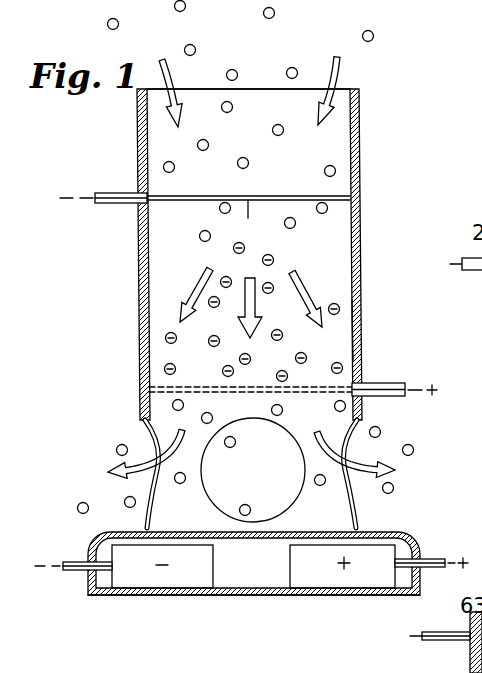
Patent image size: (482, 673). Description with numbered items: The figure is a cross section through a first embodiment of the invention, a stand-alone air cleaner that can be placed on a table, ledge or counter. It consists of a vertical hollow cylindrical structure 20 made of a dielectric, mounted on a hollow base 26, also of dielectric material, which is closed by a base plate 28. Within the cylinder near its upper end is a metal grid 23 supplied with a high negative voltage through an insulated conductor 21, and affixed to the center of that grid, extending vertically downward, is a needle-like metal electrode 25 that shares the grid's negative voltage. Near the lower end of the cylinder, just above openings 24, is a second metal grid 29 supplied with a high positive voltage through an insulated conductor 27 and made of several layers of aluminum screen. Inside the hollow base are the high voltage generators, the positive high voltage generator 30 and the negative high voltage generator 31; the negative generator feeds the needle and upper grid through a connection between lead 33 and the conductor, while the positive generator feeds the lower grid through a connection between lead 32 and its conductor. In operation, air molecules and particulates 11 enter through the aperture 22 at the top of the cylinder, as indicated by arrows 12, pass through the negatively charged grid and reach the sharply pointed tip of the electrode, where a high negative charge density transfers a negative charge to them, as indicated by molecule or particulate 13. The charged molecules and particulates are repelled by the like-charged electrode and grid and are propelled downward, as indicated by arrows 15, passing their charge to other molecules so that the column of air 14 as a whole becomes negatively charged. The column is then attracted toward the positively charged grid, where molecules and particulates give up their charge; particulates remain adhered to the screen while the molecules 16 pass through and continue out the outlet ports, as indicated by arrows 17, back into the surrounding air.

The air molecules and particulates 11 is at (372, 40).
The arrows 12 is at (162, 60).
The molecule or particulate 13 is at (233, 251).
The column of air 14 is at (337, 327).
The arrows 15 is at (302, 278).
The molecules 16 is at (276, 416).
The arrows 17 is at (363, 463).
The vertical hollow cylindrical structure 20 is at (358, 173).
The insulated conductor 21 is at (110, 208).
The aperture 22 is at (267, 88).
The metal grid 23 is at (202, 196).
The openings 24 is at (148, 435).
The metal electrode 25 is at (250, 222).
The hollow base 26 is at (413, 538).
The insulated conductor 27 is at (393, 382).
The base plate 28 is at (365, 595).
The second metal grid 29 is at (192, 387).
The positive high voltage generator 30 is at (327, 578).
The negative high voltage generator 31 is at (180, 582).
The lead 32 is at (428, 570).
The lead 33 is at (75, 570).